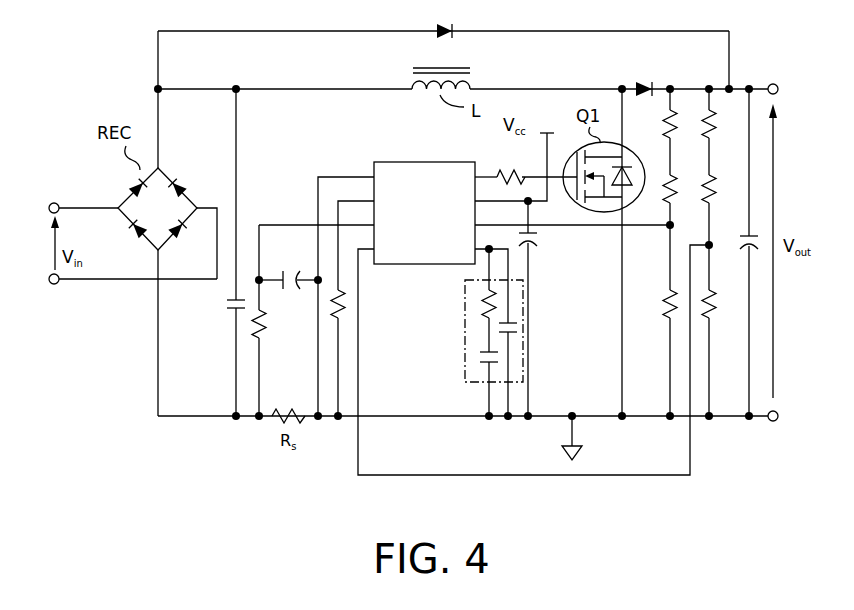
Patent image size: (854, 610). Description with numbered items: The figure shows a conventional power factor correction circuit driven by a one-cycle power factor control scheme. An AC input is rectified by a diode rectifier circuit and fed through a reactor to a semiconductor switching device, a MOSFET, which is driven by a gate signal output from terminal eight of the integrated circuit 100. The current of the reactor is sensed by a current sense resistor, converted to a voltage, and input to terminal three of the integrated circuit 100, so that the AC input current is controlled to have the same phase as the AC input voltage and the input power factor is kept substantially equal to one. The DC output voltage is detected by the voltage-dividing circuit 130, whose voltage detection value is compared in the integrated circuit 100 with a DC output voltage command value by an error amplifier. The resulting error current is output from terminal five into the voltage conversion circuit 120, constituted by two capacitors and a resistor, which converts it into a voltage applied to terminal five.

The integrated circuit 100 is at (418, 169).
The voltage conversion circuit 120 is at (465, 354).
The voltage-dividing circuit 130 is at (653, 328).